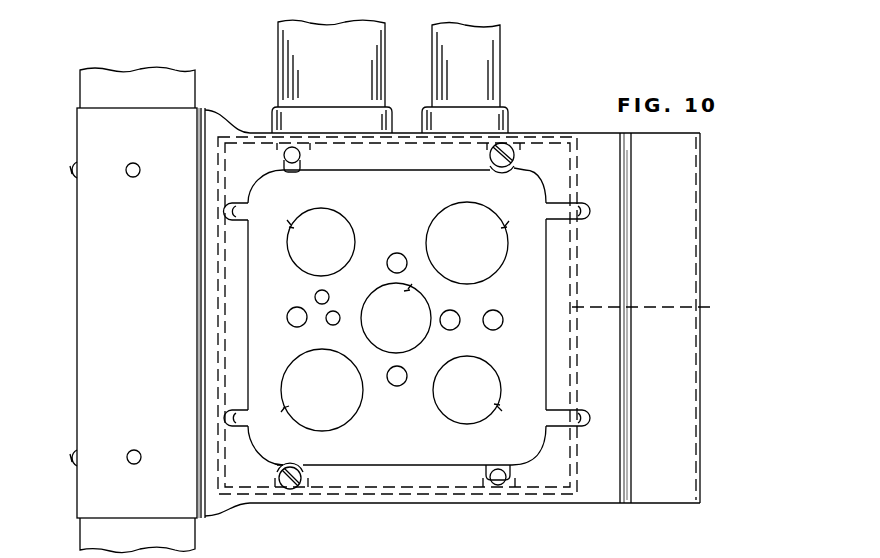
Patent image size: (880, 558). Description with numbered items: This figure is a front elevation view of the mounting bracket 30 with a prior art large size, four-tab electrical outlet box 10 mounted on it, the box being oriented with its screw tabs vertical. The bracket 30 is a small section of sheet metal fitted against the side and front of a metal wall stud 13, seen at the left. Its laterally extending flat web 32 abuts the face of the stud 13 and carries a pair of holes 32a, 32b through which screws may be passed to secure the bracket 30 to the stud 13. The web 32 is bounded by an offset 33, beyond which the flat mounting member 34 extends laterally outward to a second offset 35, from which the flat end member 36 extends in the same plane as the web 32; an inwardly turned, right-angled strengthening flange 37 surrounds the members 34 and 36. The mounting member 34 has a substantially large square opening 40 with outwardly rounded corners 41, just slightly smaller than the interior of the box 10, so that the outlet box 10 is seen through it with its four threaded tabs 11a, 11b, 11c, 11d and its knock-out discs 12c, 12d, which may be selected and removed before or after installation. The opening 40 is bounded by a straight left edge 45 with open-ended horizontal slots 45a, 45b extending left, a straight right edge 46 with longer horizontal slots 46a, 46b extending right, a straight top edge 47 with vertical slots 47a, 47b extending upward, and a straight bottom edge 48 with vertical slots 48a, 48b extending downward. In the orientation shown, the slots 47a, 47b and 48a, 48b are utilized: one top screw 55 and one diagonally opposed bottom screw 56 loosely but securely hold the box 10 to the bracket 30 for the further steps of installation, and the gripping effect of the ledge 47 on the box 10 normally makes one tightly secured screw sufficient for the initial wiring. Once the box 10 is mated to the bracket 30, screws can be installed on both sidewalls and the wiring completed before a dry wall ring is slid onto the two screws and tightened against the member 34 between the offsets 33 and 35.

The electrical outlet box 10 is at (658, 307).
The threaded tab 11a is at (302, 156).
The threaded tab 11b is at (490, 157).
The threaded tab 11c is at (511, 477).
The threaded tab 11d is at (306, 478).
The knock-out disc 12c is at (478, 276).
The knock-out disc 12d is at (312, 262).
The wall stud 13 is at (80, 533).
The electrical outlet box mounting bracket 30 is at (576, 516).
The web 32 is at (77, 333).
The hole 32a is at (139, 165).
The hole 32b is at (134, 464).
The offset 33 is at (207, 263).
The flat mounting member 34 is at (396, 504).
The offset 35 is at (625, 400).
The flat end member 36 is at (662, 355).
The strengthening flange 37 is at (698, 224).
The opening 40 is at (368, 315).
The rounded corner 41 is at (260, 183).
The left edge 45 is at (249, 360).
The slot 45a is at (224, 211).
The slot 45b is at (224, 418).
The right edge 46 is at (544, 332).
The slot 46a is at (562, 212).
The slot 46b is at (552, 420).
The top edge 47 is at (376, 173).
The slot 47a is at (292, 174).
The slot 47b is at (498, 170).
The bottom edge 48 is at (398, 462).
The slot 48a is at (297, 460).
The slot 48b is at (492, 460).
The top screw 55 is at (510, 146).
The bottom screw 56 is at (299, 467).